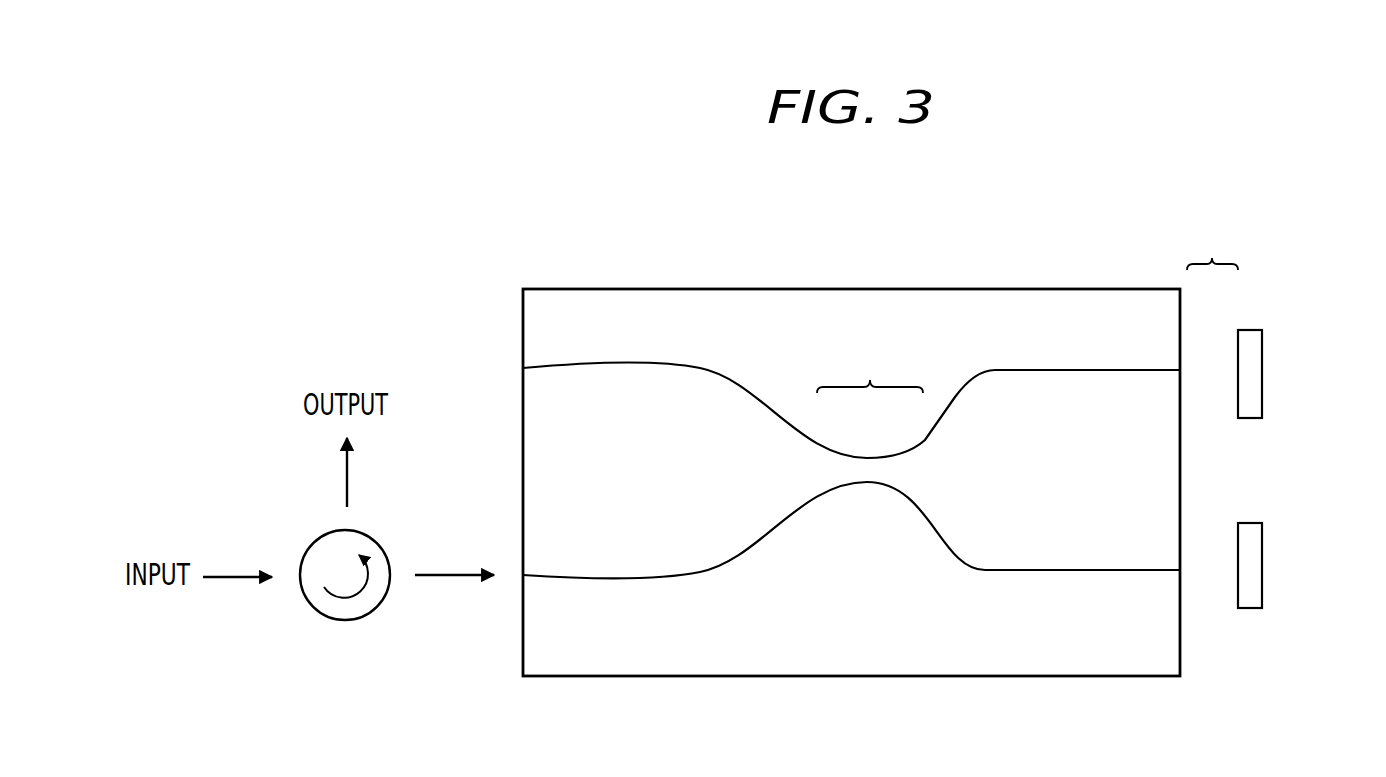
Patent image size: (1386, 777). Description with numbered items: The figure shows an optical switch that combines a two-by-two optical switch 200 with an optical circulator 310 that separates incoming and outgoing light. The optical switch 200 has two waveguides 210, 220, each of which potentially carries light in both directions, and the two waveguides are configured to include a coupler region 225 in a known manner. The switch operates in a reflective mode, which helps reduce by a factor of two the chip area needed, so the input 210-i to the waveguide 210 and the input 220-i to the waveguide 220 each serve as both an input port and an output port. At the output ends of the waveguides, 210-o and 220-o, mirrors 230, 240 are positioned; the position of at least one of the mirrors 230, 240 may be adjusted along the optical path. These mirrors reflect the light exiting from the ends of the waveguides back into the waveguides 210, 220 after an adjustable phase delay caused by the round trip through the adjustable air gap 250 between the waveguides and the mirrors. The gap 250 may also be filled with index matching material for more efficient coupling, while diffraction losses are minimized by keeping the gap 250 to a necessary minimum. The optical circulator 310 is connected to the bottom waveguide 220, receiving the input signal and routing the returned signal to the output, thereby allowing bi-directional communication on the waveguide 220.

The optical switch 200 is at (693, 289).
The waveguide 210 is at (610, 368).
The waveguide 220 is at (958, 547).
The coupler region 225 is at (870, 366).
The input 210-i is at (523, 368).
The output of waveguide 210-o is at (1109, 327).
The input 220-i is at (523, 576).
The output of waveguide 220-o is at (1108, 619).
The mirror 230 is at (1262, 372).
The mirror 240 is at (1262, 563).
The adjustable air gap 250 is at (1212, 242).
The optical circulator 310 is at (315, 612).